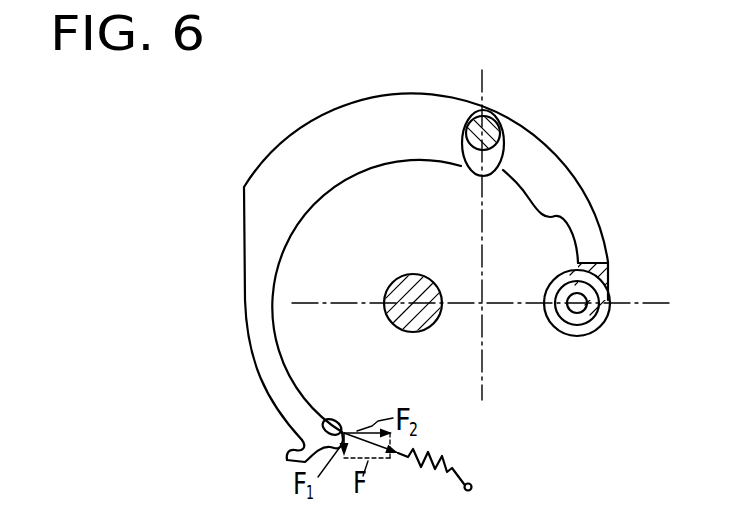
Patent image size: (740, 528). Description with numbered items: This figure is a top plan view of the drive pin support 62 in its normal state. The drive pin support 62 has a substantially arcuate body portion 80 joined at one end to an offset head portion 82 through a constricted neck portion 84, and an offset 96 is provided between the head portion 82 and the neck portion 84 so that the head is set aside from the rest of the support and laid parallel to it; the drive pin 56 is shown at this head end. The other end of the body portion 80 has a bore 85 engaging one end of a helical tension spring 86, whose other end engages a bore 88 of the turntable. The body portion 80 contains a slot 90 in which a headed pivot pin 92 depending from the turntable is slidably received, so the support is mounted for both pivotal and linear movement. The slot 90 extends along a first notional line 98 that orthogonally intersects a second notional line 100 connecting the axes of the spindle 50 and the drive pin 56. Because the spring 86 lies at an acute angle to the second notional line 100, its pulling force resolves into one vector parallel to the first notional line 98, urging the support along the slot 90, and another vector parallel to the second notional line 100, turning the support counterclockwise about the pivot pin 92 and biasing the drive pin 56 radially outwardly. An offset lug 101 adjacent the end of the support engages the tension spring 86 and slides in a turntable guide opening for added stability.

The spindle 50 is at (413, 316).
The drive pin 56 is at (577, 331).
The drive pin support 62 is at (455, 52).
The body portion 80 is at (291, 158).
The head portion 82 is at (616, 280).
The neck portion 84 is at (541, 220).
The bore 85 is at (340, 425).
The helical tension spring 86 is at (431, 487).
The bore of the turntable 88 is at (498, 487).
The slot 90 is at (505, 152).
The headed pivot pin 92 is at (494, 109).
The offset 96 is at (620, 232).
The first notional line 98 is at (480, 192).
The second notional line 100 is at (640, 307).
The offset lug 101 is at (276, 437).